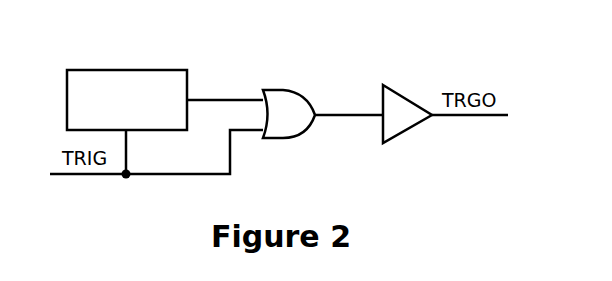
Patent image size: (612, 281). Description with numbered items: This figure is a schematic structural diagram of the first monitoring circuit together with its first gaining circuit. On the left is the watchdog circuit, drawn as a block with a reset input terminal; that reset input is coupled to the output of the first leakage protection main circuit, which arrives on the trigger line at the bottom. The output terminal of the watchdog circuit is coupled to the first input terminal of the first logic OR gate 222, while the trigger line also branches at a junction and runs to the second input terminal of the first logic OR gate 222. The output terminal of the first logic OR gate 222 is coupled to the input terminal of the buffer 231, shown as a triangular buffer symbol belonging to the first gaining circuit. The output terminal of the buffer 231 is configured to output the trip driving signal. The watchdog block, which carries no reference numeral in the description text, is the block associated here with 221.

The watchdog timer reset block 221 is at (127, 100).
The first logic OR gate 222 is at (287, 90).
The buffer 231 is at (403, 92).